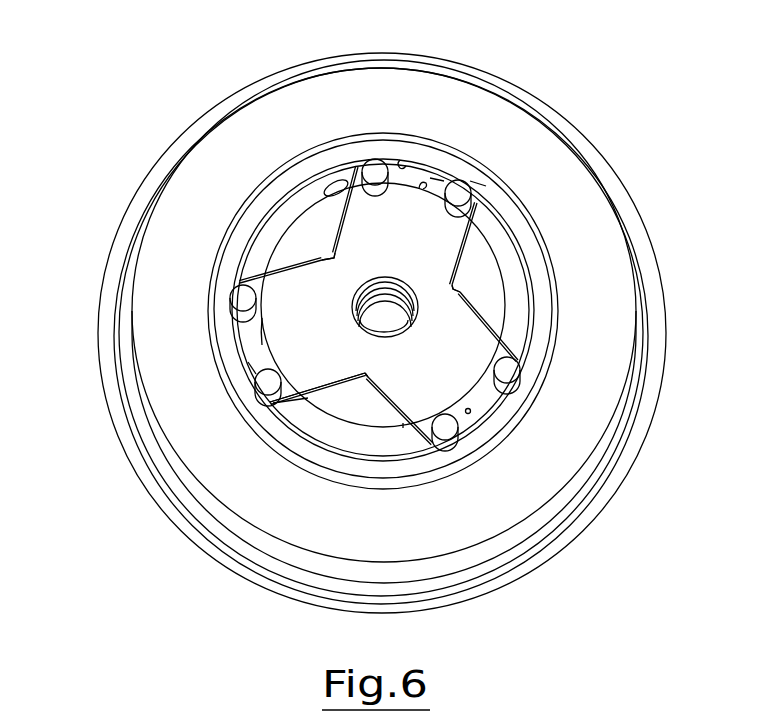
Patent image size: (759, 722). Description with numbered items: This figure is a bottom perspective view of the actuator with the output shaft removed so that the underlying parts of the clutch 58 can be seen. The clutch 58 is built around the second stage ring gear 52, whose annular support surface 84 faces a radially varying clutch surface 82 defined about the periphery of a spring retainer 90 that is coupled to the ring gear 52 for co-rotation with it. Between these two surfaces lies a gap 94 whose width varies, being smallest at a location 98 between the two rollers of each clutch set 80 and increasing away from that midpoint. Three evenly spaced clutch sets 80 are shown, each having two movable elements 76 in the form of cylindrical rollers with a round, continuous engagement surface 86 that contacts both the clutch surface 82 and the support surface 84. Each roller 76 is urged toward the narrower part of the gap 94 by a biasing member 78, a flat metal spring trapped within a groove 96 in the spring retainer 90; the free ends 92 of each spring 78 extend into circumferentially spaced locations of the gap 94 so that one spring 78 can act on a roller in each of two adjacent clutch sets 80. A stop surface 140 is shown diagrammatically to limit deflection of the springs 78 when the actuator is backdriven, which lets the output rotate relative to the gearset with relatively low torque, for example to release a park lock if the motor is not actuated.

The second stage ring gear 52 is at (585, 200).
The clutch 58 is at (548, 320).
The movable elements 76 is at (372, 168).
The biasing member 78 is at (512, 316).
The clutch set 80 is at (456, 188).
The clutch surface 82 is at (423, 190).
The support surface 84 is at (400, 160).
The engagement surface 86 is at (480, 183).
The spring retainer 90 is at (285, 330).
The free ends 92 is at (467, 422).
The gap 94 is at (257, 364).
The groove 96 is at (347, 220).
The location 98 is at (437, 170).
The stop surface 140 is at (327, 186).